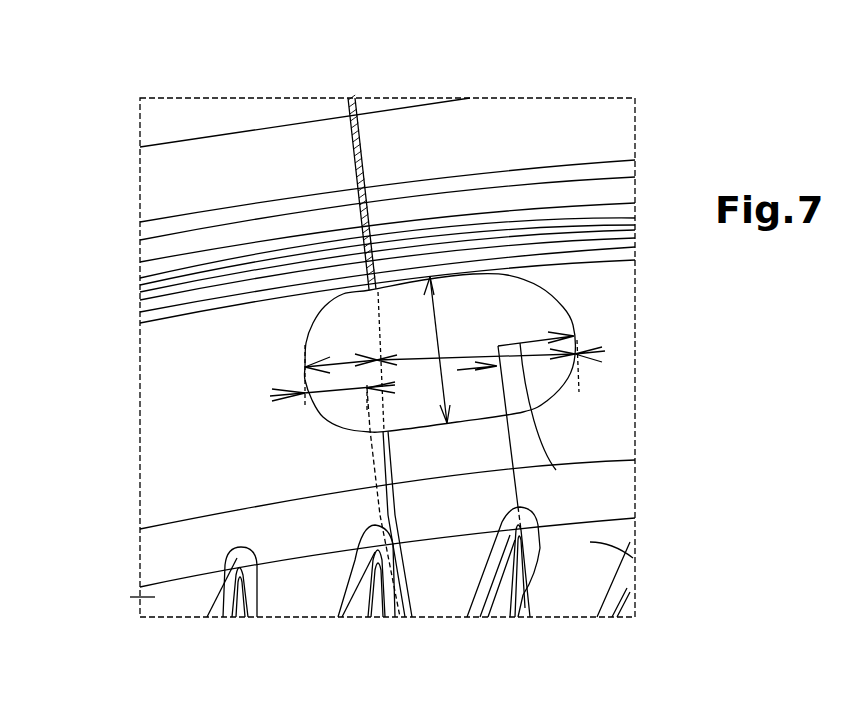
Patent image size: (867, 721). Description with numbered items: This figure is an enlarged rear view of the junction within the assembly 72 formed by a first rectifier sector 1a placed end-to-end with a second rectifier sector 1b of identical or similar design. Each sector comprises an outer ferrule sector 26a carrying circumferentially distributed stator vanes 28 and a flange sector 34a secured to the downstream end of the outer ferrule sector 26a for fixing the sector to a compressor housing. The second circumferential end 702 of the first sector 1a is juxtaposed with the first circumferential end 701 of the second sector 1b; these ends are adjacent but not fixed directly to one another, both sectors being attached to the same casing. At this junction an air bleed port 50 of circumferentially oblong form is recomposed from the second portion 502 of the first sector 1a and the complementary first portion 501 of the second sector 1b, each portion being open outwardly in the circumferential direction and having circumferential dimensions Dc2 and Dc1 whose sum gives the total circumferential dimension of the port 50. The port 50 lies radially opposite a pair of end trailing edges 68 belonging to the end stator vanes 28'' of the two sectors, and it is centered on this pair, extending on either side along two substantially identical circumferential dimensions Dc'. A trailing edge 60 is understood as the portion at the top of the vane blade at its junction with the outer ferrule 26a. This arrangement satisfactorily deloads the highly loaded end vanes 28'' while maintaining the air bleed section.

The assembly 72 is at (667, 118).
The first rectifier sector 1a is at (460, 147).
The second rectifier sector 1b is at (230, 163).
The first circumferential end 701 is at (320, 130).
The second circumferential end 702 is at (380, 130).
The air bleed port 50 is at (473, 293).
The first portion of air bleed port 501 is at (333, 338).
The second portion of air bleed port 502 is at (548, 373).
The flange sector 34a is at (203, 467).
The outer ferrule sector 26a is at (130, 597).
The stator vane 28 is at (452, 597).
The end stator vane 28'' is at (475, 638).
The trailing edge 60 is at (232, 572).
The end trailing edge 68 is at (365, 565).
The circumferential dimension of first port portion Dc1 is at (303, 352).
The circumferential dimension of second port portion Dc2 is at (560, 302).
The circumferential dimension on either side of trailing edge pair Dc' is at (397, 482).